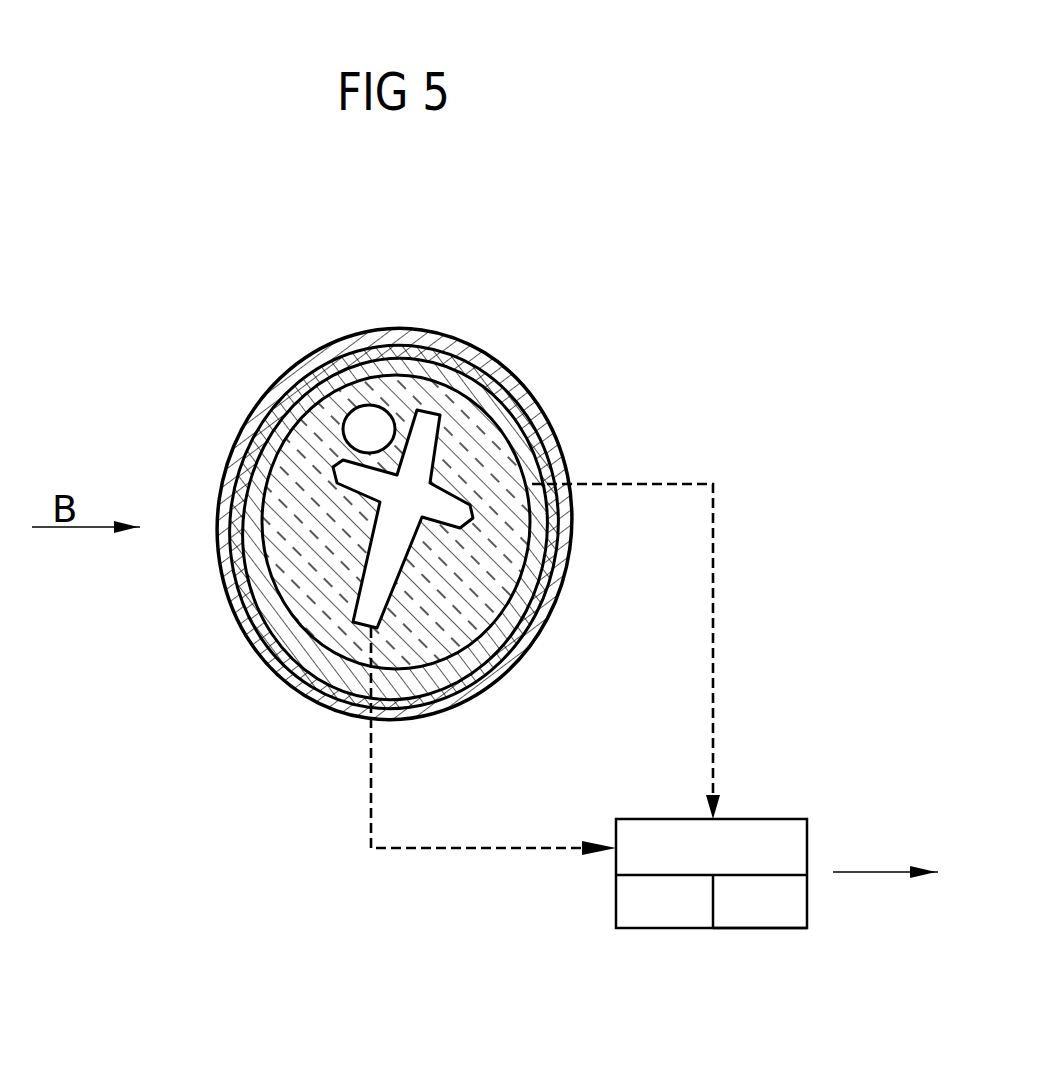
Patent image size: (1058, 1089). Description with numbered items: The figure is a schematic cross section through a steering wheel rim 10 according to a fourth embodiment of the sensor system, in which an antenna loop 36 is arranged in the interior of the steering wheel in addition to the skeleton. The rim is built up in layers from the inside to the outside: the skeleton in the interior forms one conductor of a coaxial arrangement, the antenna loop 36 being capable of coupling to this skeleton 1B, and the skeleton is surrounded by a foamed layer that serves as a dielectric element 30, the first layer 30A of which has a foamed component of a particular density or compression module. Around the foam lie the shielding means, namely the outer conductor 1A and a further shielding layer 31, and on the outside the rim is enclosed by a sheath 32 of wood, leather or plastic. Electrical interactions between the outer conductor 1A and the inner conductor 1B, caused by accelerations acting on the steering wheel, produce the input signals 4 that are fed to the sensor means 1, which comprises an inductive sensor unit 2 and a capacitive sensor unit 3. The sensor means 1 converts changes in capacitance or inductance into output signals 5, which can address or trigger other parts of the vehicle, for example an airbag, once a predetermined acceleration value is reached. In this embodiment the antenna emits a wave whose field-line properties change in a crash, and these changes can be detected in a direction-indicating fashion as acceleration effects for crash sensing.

The sensor means 1 is at (711, 873).
The inductive sensor unit 2 is at (682, 901).
The capacitive sensor unit 3 is at (760, 904).
The input signals 4 is at (715, 663).
The output signals 5 is at (885, 853).
The steering wheel rim 10 is at (400, 513).
The outer conductor 1A is at (535, 560).
The inner conductor 1B is at (360, 620).
The dielectric element 30 is at (295, 565).
The first layer 30A is at (472, 427).
The shielding layer 31 is at (553, 418).
The sheath 32 is at (462, 337).
The antenna loop 36 is at (366, 432).